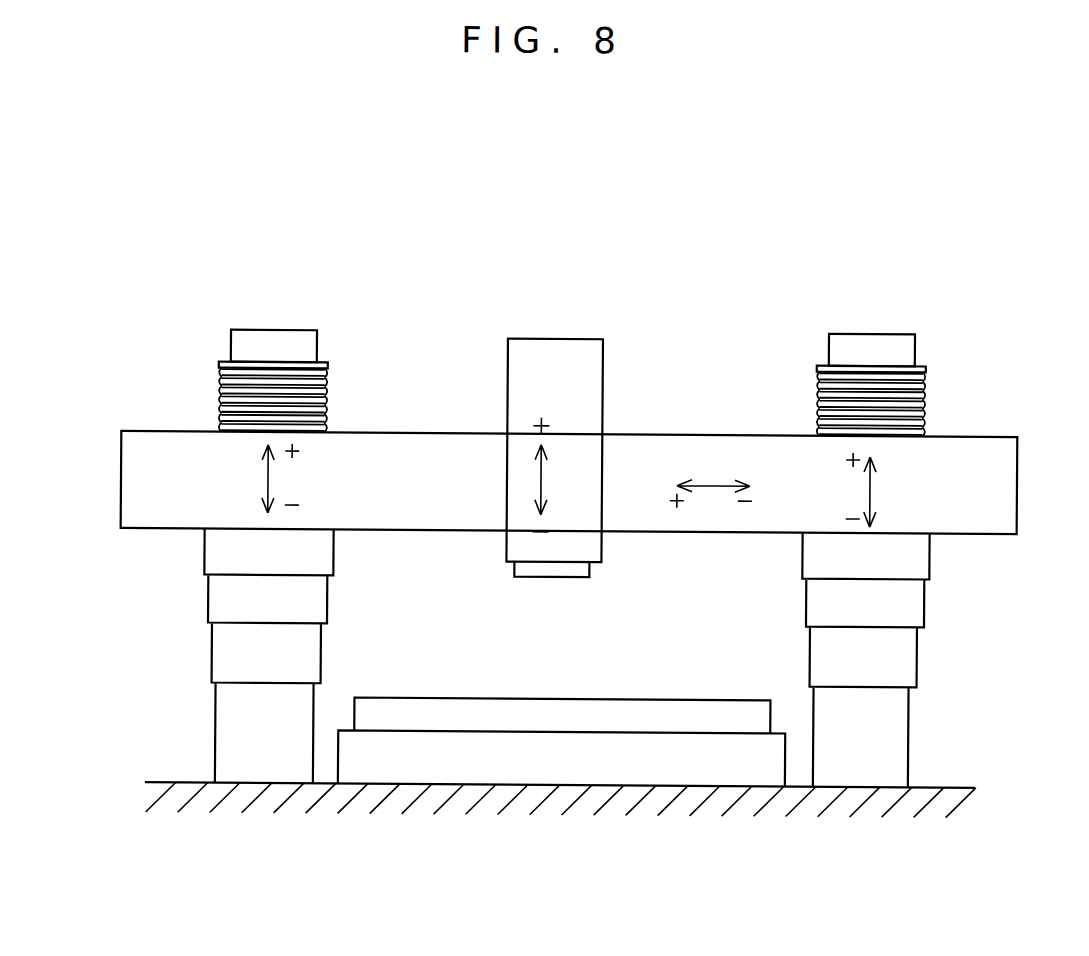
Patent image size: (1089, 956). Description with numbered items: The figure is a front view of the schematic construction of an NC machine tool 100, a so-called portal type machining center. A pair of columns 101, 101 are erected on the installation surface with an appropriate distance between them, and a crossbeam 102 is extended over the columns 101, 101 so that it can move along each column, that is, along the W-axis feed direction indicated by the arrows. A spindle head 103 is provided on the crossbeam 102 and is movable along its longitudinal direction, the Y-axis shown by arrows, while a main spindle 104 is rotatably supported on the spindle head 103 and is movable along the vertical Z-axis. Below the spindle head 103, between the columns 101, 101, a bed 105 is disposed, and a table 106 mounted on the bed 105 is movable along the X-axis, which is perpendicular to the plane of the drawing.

The NC machine tool 100 is at (597, 169).
The column 101 is at (217, 740).
The crossbeam 102 is at (387, 433).
The spindle head 103 is at (562, 338).
The main spindle 104 is at (540, 580).
The bed 105 is at (568, 782).
The table 106 is at (617, 700).